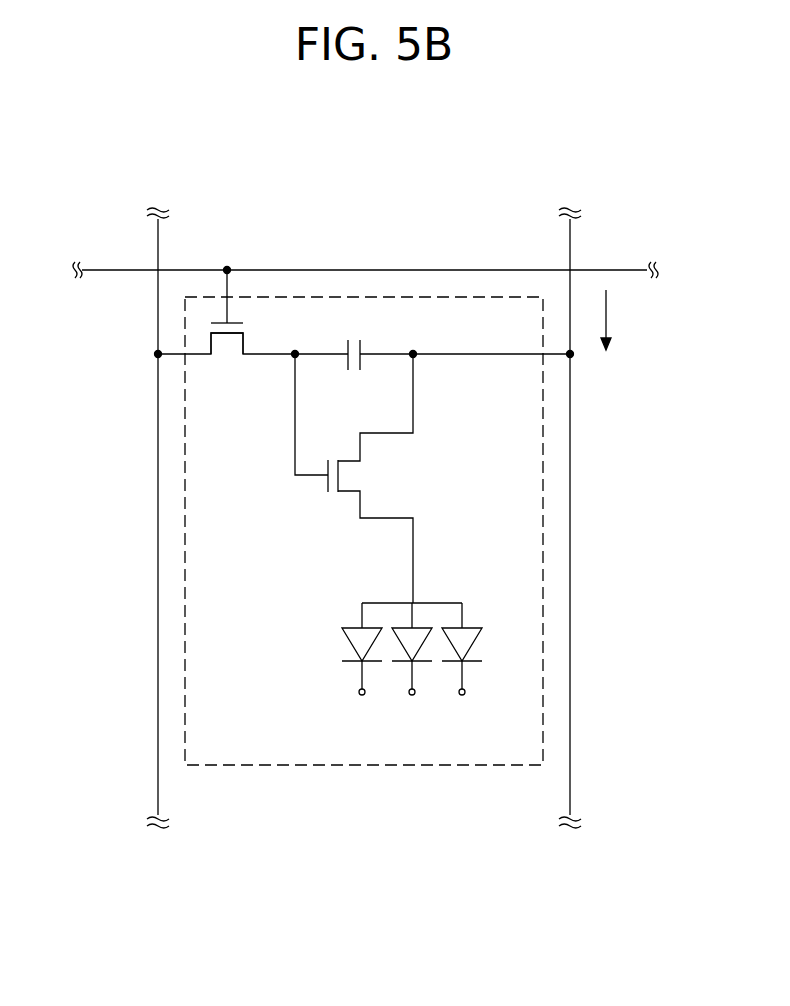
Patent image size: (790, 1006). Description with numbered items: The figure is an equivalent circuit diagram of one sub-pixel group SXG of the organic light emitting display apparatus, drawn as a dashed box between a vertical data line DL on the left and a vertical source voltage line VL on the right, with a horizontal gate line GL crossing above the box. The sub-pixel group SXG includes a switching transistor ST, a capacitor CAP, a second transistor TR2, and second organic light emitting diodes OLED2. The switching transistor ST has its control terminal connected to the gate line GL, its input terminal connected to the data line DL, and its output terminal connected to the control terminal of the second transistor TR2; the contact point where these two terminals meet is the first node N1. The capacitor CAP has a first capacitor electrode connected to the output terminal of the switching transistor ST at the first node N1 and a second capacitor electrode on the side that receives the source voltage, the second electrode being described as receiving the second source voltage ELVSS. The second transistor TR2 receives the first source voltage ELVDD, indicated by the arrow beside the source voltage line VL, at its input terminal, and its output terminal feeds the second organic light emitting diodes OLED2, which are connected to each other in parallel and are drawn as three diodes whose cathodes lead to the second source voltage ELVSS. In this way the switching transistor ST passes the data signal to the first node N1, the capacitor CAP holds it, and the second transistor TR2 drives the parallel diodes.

The data line DL is at (158, 507).
The gate line GL is at (349, 270).
The source voltage line VL is at (570, 507).
The first source voltage ELVDD is at (636, 320).
The sub-pixel group SXG is at (270, 767).
The switching transistor ST is at (227, 358).
The first node N1 is at (305, 401).
The capacitor CAP is at (369, 336).
The second transistor TR2 is at (323, 494).
The second organic light emitting diodes OLED2 is at (350, 646).
The second source voltage ELVSS is at (406, 711).